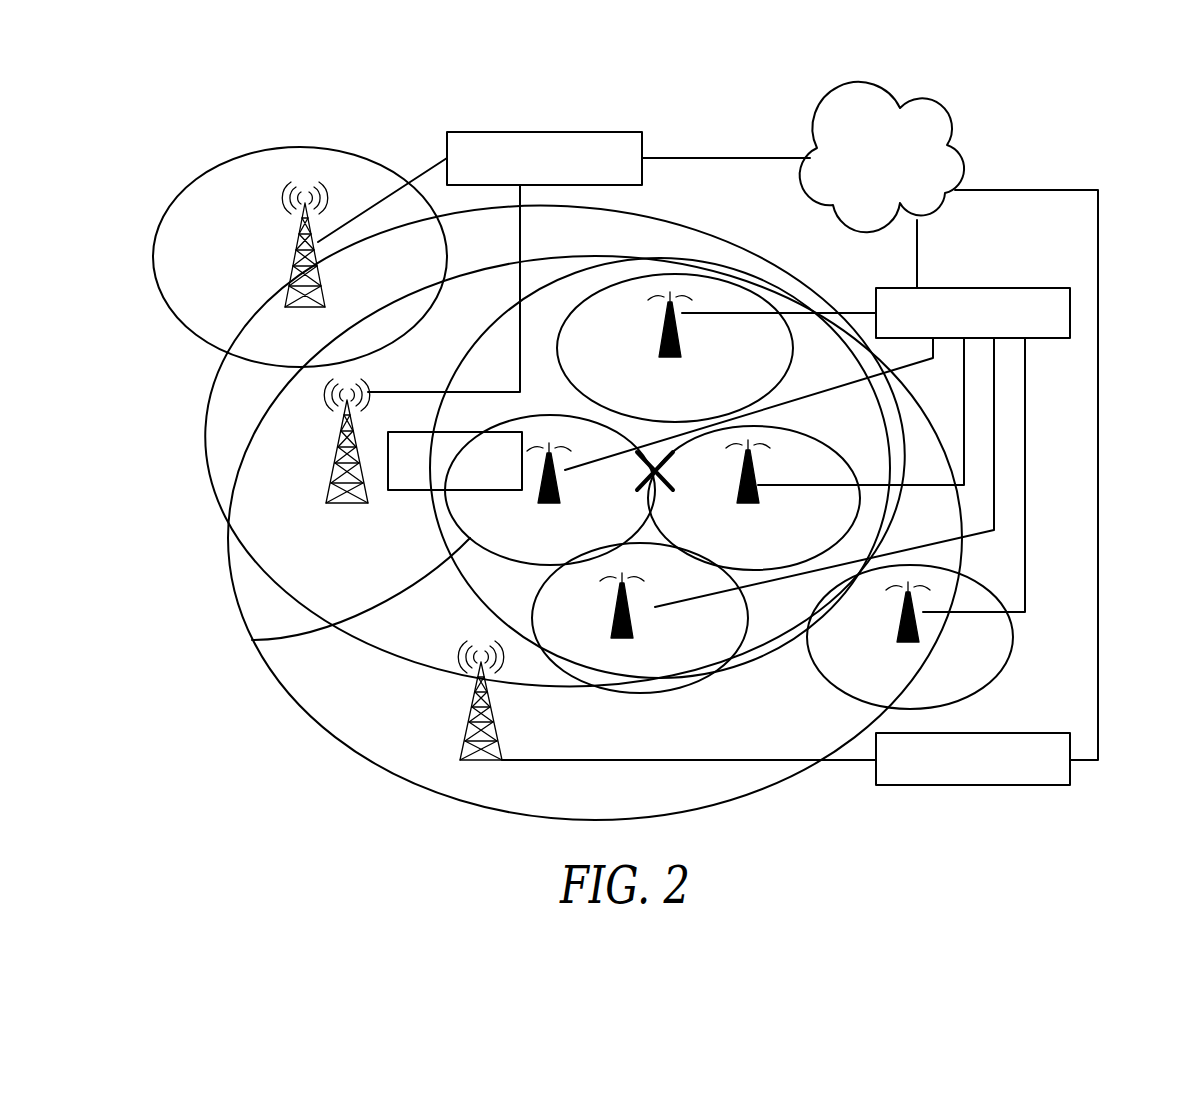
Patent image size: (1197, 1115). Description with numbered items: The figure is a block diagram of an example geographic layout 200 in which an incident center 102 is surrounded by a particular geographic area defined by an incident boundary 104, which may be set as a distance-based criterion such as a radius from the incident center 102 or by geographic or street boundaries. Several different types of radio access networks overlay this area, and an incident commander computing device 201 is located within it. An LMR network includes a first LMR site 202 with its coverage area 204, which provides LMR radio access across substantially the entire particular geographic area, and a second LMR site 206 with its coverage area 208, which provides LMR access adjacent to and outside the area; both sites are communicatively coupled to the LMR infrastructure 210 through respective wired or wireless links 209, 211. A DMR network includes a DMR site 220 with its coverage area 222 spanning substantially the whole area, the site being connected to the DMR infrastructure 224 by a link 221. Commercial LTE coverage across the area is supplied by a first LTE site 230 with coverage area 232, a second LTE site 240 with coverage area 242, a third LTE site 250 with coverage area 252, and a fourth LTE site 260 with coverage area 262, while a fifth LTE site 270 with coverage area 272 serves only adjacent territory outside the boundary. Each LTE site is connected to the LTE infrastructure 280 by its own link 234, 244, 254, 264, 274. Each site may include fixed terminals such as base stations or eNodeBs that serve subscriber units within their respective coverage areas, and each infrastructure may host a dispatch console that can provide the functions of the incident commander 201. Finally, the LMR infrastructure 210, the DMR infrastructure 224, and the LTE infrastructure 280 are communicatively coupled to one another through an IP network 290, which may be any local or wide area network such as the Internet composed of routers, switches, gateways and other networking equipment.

The geographic layout 200 is at (919, 475).
The incident center 102 is at (673, 478).
The incident boundary 104 is at (253, 639).
The incident commander computing device 201 is at (418, 431).
The LMR site 1 202 is at (285, 533).
The coverage area 204 is at (200, 447).
The LMR site 2 206 is at (270, 330).
The coverage area 208 is at (190, 185).
The link 209 is at (524, 235).
The LMR infrastructure 210 is at (628, 132).
The link 211 is at (430, 168).
The DMR site 1 220 is at (462, 792).
The link 221 is at (753, 757).
The coverage area 222 is at (379, 767).
The DMR infrastructure 224 is at (1021, 733).
The LTE site 1 230 is at (712, 362).
The coverage area 232 is at (790, 352).
The link 234 is at (852, 312).
The LTE site 2 240 is at (527, 545).
The coverage area 242 is at (462, 556).
The link 244 is at (933, 348).
The LTE site 3 250 is at (758, 533).
The coverage area 252 is at (808, 432).
The link 254 is at (964, 383).
The LTE site 4 260 is at (656, 641).
The coverage area 262 is at (640, 695).
The link 264 is at (994, 452).
The LTE site 5 270 is at (975, 657).
The coverage area 272 is at (1013, 630).
The link 274 is at (1025, 537).
The LTE infrastructure 280 is at (1028, 288).
The IP network 290 is at (940, 112).